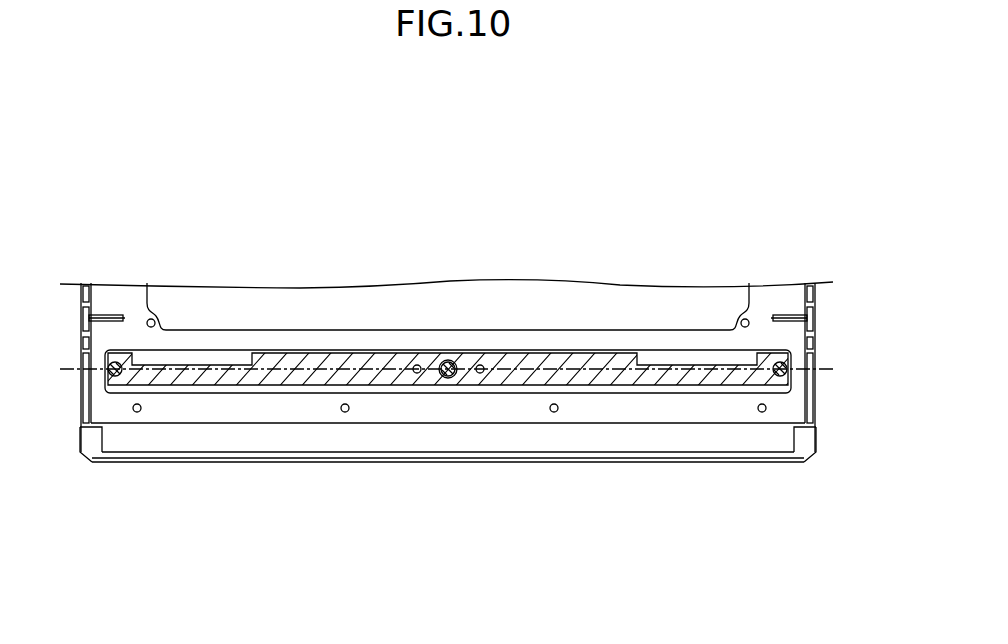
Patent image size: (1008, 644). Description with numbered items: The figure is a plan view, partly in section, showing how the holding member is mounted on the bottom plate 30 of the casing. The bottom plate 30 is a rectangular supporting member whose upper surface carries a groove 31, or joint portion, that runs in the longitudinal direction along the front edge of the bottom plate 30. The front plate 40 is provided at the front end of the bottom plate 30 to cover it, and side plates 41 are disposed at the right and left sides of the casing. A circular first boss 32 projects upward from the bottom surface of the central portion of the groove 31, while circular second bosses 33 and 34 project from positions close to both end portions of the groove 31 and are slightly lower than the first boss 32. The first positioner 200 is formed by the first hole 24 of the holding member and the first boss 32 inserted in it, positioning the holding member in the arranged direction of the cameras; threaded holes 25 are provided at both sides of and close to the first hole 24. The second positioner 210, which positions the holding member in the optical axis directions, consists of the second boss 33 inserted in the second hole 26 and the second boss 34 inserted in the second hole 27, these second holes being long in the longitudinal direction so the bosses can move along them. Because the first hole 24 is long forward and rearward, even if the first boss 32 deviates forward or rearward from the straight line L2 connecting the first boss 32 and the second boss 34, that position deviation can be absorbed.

The first positioner 200 is at (455, 246).
The first hole 24 is at (446, 362).
The first boss 32 is at (450, 362).
The threaded holes 25 is at (415, 364).
The straight line L2 is at (569, 369).
The second positioner 210 is at (452, 264).
The second boss 33 is at (102, 316).
The second hole 26 is at (120, 366).
The second hole 27 is at (778, 366).
The second boss 34 is at (780, 364).
The groove 31 is at (275, 394).
The bottom plate 30 is at (356, 424).
The front plate 40 is at (597, 462).
The side plates 41 is at (80, 427).